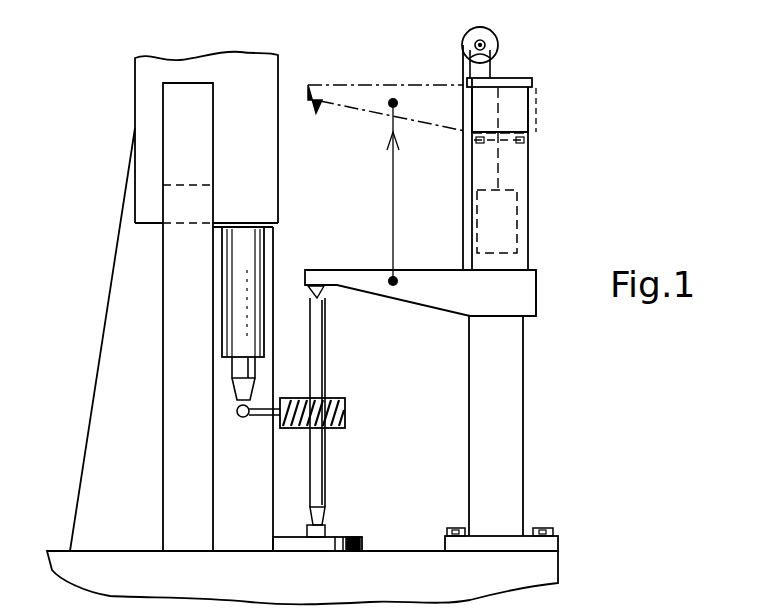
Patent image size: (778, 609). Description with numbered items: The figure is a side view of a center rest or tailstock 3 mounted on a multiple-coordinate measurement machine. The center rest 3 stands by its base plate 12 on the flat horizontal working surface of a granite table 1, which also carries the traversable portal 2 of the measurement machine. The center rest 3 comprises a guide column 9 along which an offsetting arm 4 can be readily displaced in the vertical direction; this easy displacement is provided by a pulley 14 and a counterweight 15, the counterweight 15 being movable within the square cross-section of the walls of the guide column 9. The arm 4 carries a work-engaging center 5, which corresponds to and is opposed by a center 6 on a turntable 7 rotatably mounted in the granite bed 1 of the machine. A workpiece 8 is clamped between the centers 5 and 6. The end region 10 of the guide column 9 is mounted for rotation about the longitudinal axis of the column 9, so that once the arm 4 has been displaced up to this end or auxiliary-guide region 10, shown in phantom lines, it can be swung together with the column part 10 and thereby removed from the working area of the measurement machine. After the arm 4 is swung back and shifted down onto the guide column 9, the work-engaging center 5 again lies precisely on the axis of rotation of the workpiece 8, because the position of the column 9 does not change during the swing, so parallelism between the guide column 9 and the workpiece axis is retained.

The granite table 1 is at (545, 572).
The traversable portal 2 is at (100, 479).
The center rest 3 is at (544, 302).
The offsetting arm 4 is at (416, 287).
The work-engaging center 5 is at (309, 292).
The center 6 is at (322, 524).
The turntable 7 is at (350, 535).
The workpiece 8 is at (346, 421).
The guide column 9 is at (512, 418).
The end region 10 is at (510, 110).
The base plate 12 is at (545, 545).
The pulley 14 is at (497, 42).
The counterweight 15 is at (505, 245).